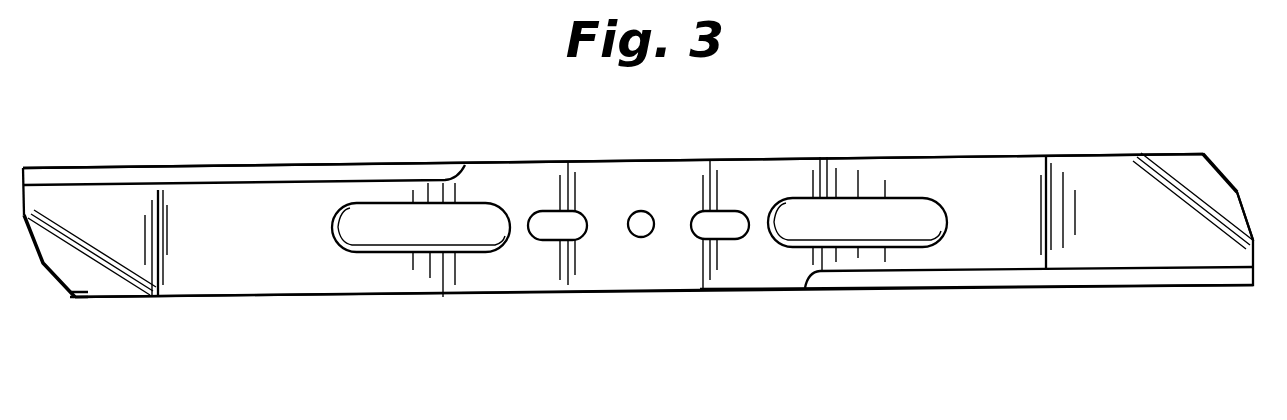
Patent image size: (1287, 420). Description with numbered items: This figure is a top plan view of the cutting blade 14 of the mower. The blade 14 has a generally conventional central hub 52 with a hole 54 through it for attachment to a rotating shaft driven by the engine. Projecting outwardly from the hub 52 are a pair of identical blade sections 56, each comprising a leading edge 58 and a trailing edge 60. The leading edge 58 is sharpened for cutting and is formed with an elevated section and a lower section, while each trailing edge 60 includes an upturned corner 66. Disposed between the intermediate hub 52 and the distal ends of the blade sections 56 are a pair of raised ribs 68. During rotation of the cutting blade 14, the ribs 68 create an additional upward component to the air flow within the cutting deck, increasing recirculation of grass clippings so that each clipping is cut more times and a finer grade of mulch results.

The cutting blade 14 is at (447, 296).
The central hub 52 is at (679, 267).
The hole 54 is at (641, 222).
The blade sections 56 is at (190, 298).
The leading edge 58 is at (199, 166).
The trailing edge 60 is at (297, 298).
The upturned corner 66 is at (76, 298).
The raised ribs 68 is at (421, 215).